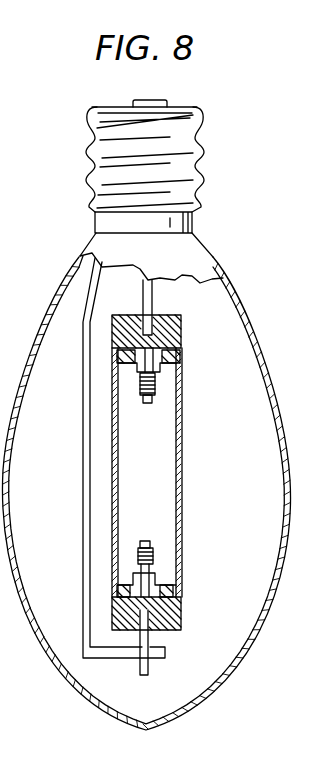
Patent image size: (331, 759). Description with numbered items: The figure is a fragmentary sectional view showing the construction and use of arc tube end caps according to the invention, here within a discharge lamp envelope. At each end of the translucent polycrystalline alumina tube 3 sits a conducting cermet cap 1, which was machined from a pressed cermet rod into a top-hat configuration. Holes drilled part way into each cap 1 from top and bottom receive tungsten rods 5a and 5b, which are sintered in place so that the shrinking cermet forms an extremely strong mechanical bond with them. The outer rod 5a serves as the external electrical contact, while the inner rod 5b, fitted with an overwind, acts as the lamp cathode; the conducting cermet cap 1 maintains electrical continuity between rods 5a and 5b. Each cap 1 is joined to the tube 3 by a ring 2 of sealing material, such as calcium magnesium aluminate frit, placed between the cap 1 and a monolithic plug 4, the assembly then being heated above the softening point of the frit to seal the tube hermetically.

The cap 1 is at (182, 332).
The ring 2 is at (182, 349).
The translucent polycrystalline alumina tube 3 is at (183, 449).
The monolithic plug 4 is at (118, 360).
The outer rod 5a is at (152, 290).
The rod 5b is at (155, 388).